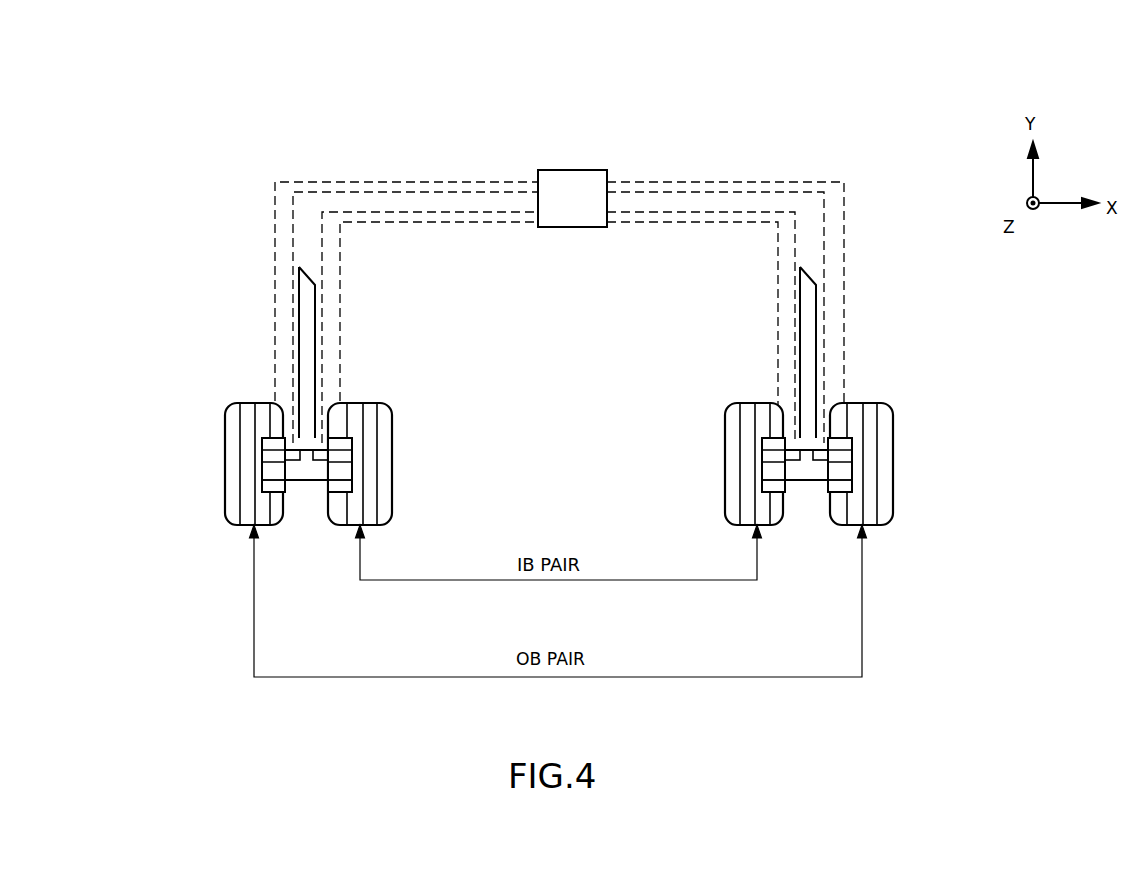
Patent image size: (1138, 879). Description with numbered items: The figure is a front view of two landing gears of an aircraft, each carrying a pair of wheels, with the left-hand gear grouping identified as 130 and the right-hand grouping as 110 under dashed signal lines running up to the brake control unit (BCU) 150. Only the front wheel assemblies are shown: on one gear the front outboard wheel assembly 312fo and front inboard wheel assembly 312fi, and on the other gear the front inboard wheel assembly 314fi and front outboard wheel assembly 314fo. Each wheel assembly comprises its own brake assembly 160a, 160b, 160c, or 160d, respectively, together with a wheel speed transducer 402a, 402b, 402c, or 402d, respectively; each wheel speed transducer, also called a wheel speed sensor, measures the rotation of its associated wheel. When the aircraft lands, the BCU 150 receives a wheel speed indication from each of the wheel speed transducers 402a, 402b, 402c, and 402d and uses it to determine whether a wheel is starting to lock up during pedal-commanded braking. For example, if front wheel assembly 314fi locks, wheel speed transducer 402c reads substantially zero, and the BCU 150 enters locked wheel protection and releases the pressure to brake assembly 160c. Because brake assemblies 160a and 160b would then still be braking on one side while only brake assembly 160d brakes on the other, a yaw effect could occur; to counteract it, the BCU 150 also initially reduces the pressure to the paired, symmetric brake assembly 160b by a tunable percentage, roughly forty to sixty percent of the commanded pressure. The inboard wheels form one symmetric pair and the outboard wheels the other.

The aircraft brake system / right wheel pair assembly 110 is at (802, 118).
The left wheel pair brake assembly 130 is at (310, 118).
The brake control unit (BCU) 150 is at (607, 172).
The brake assembly 160a is at (281, 492).
The brake assembly 160b is at (333, 492).
The brake assembly 160c is at (778, 491).
The brake assembly 160d is at (852, 493).
The front wheel assembly 312fo is at (224, 416).
The front wheel assembly 312fi is at (396, 416).
The front wheel assembly 314fi is at (724, 416).
The front wheel assembly 314fo is at (896, 416).
The wheel speed transducer 402a is at (295, 446).
The wheel speed transducer 402b is at (326, 444).
The wheel speed transducer 402c is at (795, 446).
The wheel speed transducer 402d is at (826, 444).